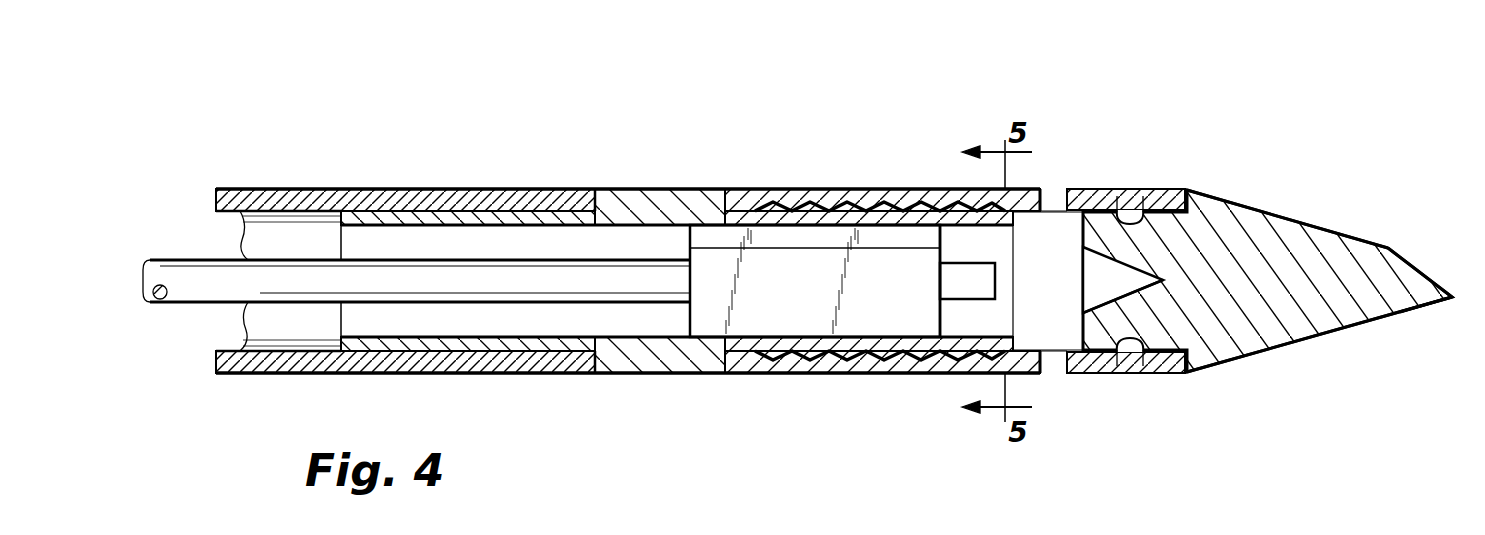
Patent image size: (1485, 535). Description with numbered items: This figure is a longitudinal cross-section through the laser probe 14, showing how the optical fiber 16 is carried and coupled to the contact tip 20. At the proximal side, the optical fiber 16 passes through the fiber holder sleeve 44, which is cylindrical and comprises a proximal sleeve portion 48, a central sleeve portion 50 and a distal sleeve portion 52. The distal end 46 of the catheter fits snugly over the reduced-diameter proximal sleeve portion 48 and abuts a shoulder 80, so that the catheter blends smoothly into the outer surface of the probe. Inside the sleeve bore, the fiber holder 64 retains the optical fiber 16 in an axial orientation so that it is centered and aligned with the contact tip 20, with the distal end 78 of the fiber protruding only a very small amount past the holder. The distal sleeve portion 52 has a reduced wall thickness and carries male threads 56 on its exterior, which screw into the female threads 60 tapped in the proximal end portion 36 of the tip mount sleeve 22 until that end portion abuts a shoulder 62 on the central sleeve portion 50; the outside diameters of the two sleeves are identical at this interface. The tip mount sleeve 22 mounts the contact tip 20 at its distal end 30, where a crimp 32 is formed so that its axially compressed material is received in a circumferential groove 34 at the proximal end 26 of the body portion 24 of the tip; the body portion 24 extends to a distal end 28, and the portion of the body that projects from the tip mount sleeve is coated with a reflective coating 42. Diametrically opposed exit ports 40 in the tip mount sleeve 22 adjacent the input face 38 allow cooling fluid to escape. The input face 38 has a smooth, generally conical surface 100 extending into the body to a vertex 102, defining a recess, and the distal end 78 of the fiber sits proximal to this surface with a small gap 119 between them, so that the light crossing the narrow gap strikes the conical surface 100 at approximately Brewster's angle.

The laser probe 14 is at (1360, 98).
The optical fiber 16 is at (183, 270).
The contact tip 20 is at (1318, 222).
The tip mount sleeve 22 is at (947, 186).
The body portion 24 is at (1247, 200).
The proximal end 26 is at (1085, 373).
The distal end 28 is at (1415, 237).
The distal end 30 is at (1183, 373).
The crimp 32 is at (1122, 190).
The circumferential groove 34 is at (1165, 190).
The proximal end portion 36 is at (762, 192).
The input face 38 is at (1078, 190).
The exit ports 40 is at (1050, 200).
The coating 42 is at (1393, 316).
The fiber holder sleeve 44 is at (644, 188).
The distal end of the catheter 46 is at (257, 373).
The proximal sleeve portion 48 is at (450, 202).
The central sleeve portion 50 is at (678, 190).
The distal sleeve portion 52 is at (823, 192).
The threads 56 is at (868, 192).
The female threads 60 is at (925, 192).
The shoulder 62 is at (727, 192).
The fiber holder 64 is at (713, 320).
The distal end of the fiber 78 is at (998, 280).
The shoulder 80 is at (592, 192).
The conical surface 100 is at (1125, 300).
The vertex 102 is at (1192, 283).
The gap 119 is at (1030, 225).